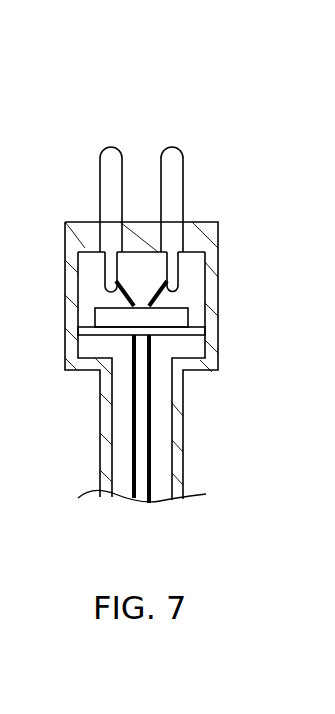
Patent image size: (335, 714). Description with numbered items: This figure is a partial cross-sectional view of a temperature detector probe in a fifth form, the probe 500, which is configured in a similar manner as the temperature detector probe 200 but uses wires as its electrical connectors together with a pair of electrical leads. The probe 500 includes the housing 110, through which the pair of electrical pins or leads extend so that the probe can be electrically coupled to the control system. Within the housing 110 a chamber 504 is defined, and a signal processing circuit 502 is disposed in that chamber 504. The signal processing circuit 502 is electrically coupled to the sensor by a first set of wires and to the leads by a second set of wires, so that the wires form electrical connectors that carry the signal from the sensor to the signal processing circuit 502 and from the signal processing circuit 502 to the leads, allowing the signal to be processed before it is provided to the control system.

The probe 500 is at (196, 313).
The housing 110 is at (183, 395).
The chamber 504 is at (202, 277).
The signal processing circuit 502 is at (177, 318).
The temperature detector probe 200 is at (7, 160).